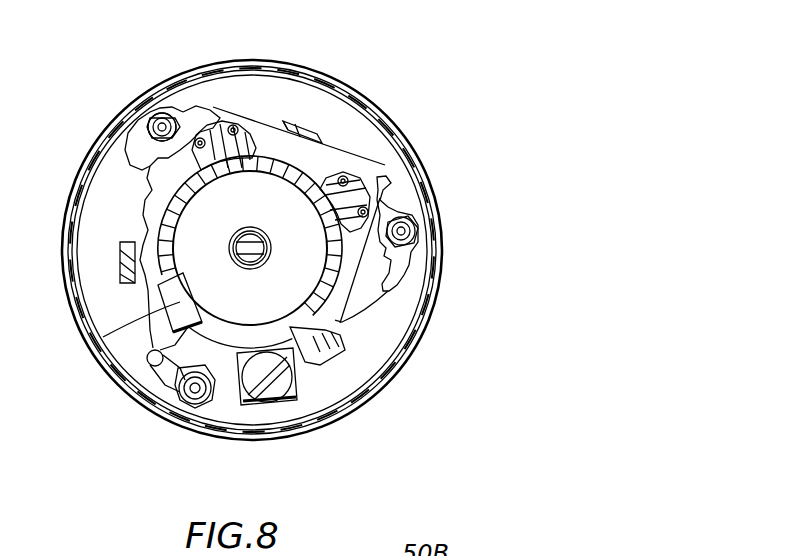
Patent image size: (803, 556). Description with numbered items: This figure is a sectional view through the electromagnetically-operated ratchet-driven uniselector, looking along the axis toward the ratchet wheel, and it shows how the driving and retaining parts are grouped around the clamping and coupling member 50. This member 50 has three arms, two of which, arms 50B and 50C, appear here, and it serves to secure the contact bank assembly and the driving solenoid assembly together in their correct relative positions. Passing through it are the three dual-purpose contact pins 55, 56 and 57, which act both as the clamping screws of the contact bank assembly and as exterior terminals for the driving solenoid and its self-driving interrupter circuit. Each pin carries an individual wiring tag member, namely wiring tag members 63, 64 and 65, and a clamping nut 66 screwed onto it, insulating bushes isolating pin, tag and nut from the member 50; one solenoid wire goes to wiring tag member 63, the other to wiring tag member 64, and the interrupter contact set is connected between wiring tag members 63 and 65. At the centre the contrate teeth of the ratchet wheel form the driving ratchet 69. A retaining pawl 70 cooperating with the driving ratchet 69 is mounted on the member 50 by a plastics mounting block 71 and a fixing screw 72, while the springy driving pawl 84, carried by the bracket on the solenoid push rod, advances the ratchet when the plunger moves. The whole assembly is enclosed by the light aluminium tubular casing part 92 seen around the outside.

The clamping and coupling member 50 is at (357, 293).
The arm of clamping and coupling member 50B is at (120, 263).
The arm of clamping and coupling member 50C is at (333, 350).
The dual-purpose contact pin 55 is at (150, 120).
The dual-purpose contact pin 56 is at (405, 231).
The dual-purpose contact pin 57 is at (197, 387).
The wiring tag member 63 is at (188, 115).
The wiring tag member 64 is at (393, 203).
The wiring tag member 65 is at (175, 380).
The clamping nut 66 is at (165, 122).
The driving ratchet 69 is at (308, 173).
The retaining pawl 70 is at (178, 375).
The mounting block 71 is at (253, 407).
The fixing screw 72 is at (280, 387).
The springy driving pawl 84 is at (178, 302).
The tubular casing part 92 is at (403, 158).